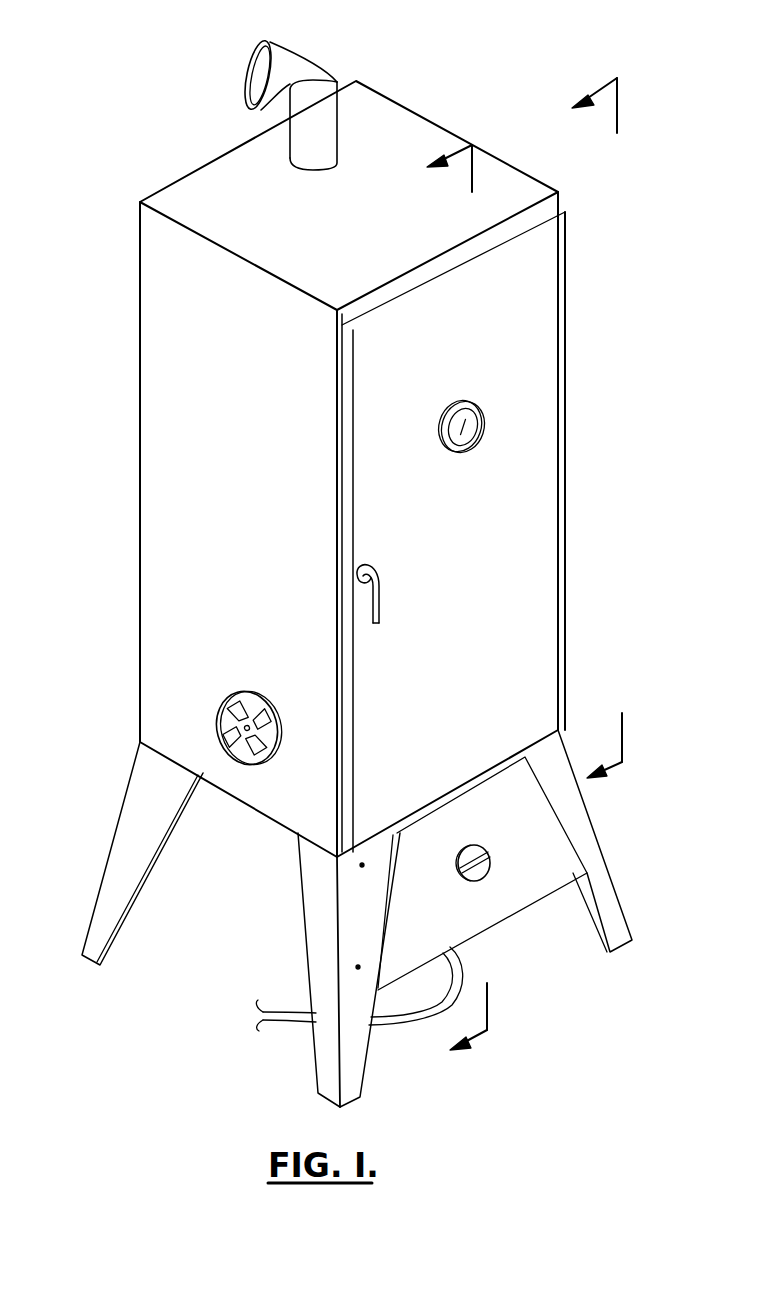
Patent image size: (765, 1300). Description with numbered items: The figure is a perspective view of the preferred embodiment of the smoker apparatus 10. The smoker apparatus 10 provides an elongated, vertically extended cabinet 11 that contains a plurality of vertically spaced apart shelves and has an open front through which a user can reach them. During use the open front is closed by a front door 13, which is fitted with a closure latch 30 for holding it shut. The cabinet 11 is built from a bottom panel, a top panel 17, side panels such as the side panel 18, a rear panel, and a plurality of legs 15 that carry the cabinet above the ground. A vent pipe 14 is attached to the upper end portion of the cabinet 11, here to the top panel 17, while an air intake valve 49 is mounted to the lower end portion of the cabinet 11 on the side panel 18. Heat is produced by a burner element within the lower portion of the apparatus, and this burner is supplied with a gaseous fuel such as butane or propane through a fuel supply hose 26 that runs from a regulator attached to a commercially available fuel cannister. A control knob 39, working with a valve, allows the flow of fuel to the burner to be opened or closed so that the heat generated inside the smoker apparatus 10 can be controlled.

The smoker apparatus 10 is at (135, 112).
The cabinet 11 is at (163, 463).
The front door 13 is at (535, 518).
The vent pipe 14 is at (297, 70).
The legs 15 is at (122, 865).
The top panel 17 is at (183, 195).
The side panel 18 is at (263, 567).
The fuel supply hose 26 is at (292, 1010).
The closure latch 30 is at (382, 610).
The control knob 39 is at (460, 883).
The air intake valve 49 is at (225, 693).